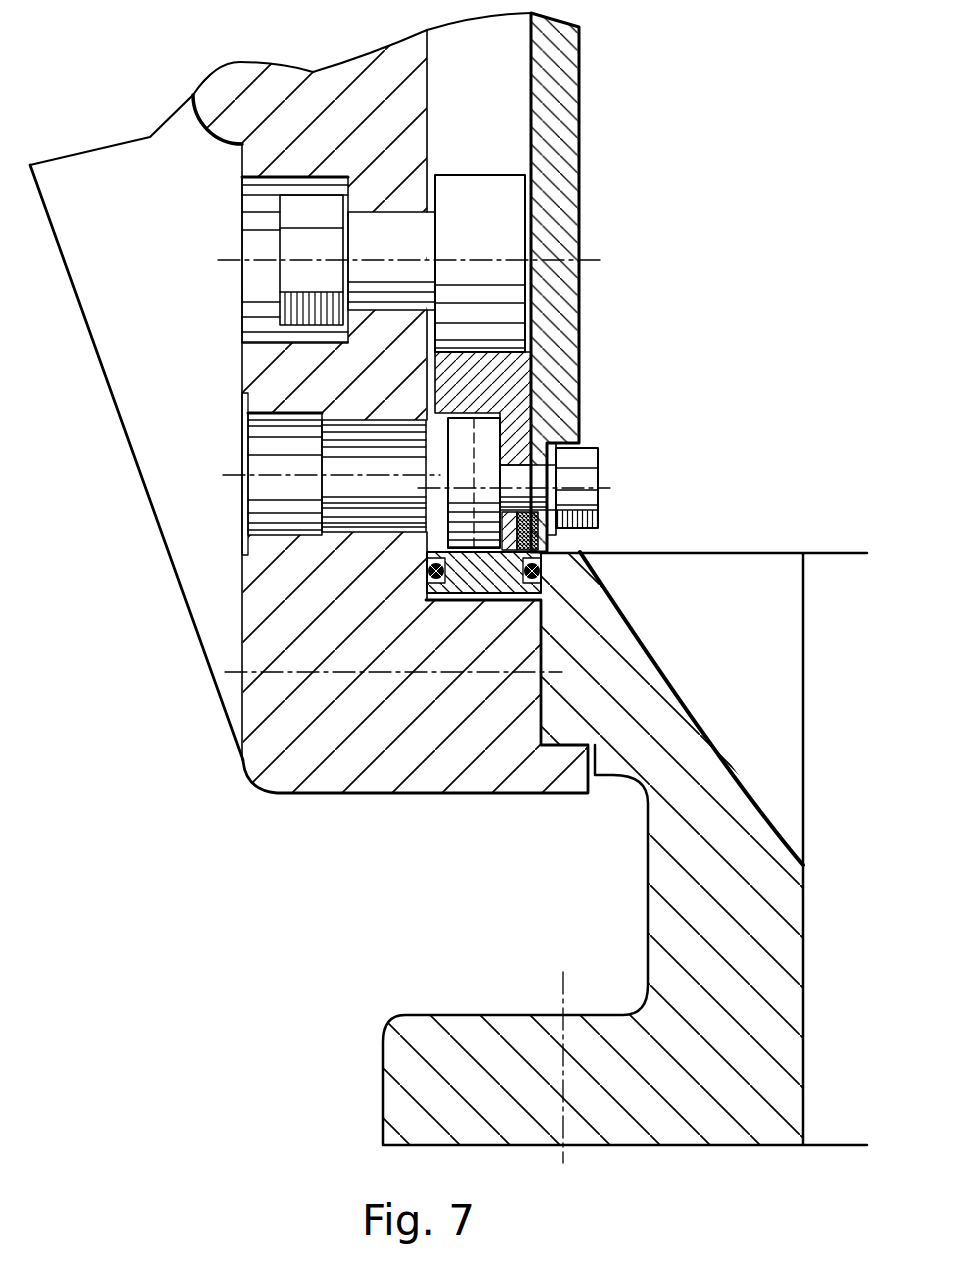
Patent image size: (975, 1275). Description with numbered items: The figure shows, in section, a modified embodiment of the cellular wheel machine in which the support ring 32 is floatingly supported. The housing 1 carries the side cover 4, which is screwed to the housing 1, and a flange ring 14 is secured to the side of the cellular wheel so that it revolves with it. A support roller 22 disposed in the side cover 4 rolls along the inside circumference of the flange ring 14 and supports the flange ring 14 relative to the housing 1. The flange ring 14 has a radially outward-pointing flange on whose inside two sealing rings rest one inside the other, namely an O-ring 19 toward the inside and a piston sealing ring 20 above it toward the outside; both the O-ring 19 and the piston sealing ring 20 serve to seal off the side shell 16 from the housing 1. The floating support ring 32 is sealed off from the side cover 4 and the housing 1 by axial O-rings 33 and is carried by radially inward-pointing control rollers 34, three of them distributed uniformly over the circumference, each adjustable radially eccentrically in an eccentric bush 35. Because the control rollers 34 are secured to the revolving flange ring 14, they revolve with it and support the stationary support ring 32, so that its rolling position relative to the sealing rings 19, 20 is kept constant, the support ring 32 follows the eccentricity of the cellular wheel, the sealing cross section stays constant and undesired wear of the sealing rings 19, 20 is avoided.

The housing 1 is at (670, 730).
The side cover 4 is at (283, 372).
The flange ring 14 is at (485, 388).
The side shell 16 is at (581, 117).
The O-ring 19 is at (582, 540).
The piston sealing ring 20 is at (545, 580).
The support roller 22 is at (481, 228).
The floatingly supported support ring 32 is at (492, 595).
The axial O-rings 33 is at (420, 570).
The control rollers 34 is at (483, 442).
The eccentric bushes 35 is at (560, 478).